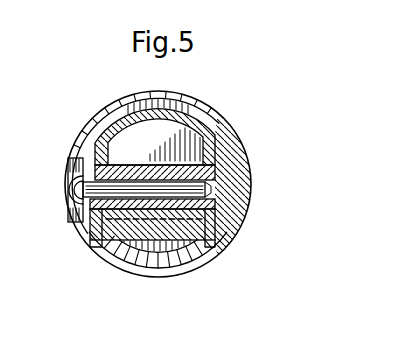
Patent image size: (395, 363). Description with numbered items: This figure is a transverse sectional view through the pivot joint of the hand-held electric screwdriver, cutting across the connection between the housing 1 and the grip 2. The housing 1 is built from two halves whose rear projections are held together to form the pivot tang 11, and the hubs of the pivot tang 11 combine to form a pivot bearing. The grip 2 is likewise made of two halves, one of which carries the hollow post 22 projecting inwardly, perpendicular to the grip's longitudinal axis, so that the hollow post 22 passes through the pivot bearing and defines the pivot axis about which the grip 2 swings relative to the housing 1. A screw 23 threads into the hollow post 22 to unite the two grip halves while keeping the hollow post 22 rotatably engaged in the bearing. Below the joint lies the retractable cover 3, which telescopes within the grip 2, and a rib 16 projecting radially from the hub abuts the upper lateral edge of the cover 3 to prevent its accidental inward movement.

The housing 1 is at (100, 257).
The grip 2 is at (250, 199).
The retractable cover 3 is at (180, 262).
The pivot tang 11 is at (191, 109).
The rib 16 is at (155, 232).
The hollow post 22 is at (140, 202).
The screw 23 is at (71, 197).